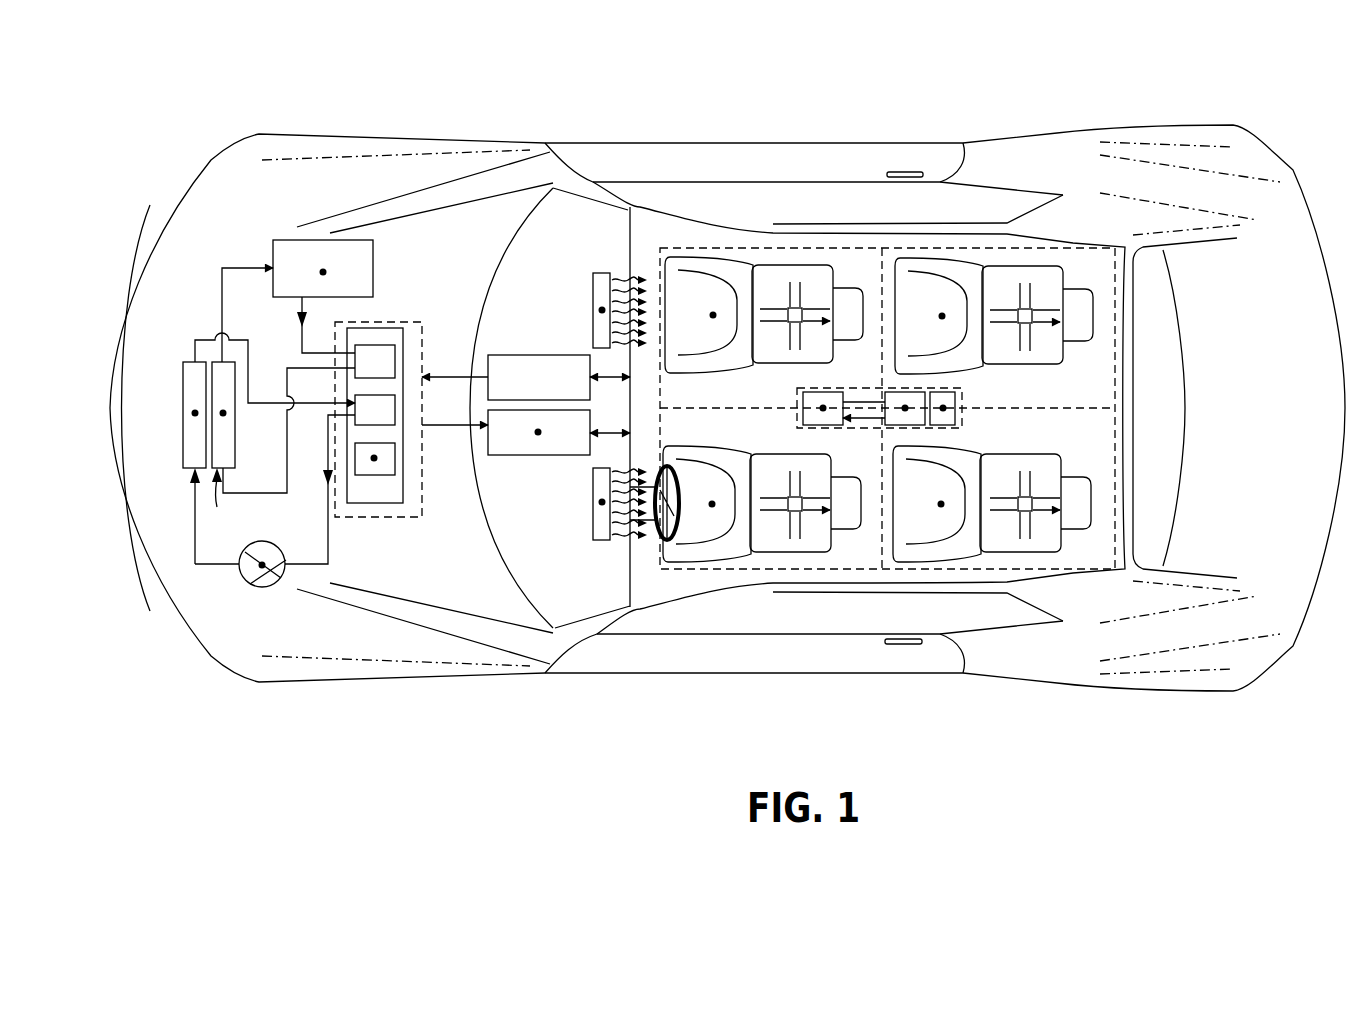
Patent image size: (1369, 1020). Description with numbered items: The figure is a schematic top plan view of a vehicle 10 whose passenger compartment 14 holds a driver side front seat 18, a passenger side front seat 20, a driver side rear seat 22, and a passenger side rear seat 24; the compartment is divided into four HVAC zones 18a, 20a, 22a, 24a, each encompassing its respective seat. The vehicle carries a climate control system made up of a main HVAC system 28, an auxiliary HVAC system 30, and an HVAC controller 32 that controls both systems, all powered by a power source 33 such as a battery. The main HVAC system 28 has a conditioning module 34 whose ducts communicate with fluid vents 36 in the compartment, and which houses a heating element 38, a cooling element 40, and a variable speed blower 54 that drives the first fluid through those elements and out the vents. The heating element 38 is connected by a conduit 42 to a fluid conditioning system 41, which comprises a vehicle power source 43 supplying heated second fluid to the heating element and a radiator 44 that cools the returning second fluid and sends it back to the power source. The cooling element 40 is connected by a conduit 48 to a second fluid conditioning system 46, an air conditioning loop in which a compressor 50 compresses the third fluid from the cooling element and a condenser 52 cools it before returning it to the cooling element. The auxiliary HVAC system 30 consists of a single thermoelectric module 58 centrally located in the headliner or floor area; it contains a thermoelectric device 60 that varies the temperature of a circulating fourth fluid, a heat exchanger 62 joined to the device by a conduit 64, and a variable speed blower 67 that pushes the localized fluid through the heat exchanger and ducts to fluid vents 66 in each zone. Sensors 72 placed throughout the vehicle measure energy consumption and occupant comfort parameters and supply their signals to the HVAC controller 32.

The vehicle 10 is at (293, 125).
The passenger compartment 14 is at (868, 247).
The driver side front seat 18 is at (680, 562).
The HVAC zone 18a is at (843, 565).
The passenger side front seat 20 is at (680, 372).
The HVAC zone 20a is at (862, 262).
The driver side rear seat 22 is at (1050, 462).
The HVAC zone 22a is at (1073, 565).
The passenger side rear seat 24 is at (1052, 277).
The HVAC zone 24a is at (1090, 263).
The main HVAC system 28 is at (430, 347).
The auxiliary HVAC system 30 is at (658, 247).
The HVAC controller 32 is at (538, 355).
The power source 33 is at (560, 455).
The conditioning module 34 is at (393, 322).
The fluid vents 36 is at (593, 280).
The heating element 38 is at (363, 378).
The cooling element 40 is at (388, 427).
The fluid conditioning system 41 is at (219, 501).
The conduit 42 is at (222, 305).
The vehicle power source 43 is at (288, 240).
The radiator 44 is at (235, 440).
The second fluid conditioning system 46 is at (246, 443).
The conduit 48 is at (330, 547).
The compressor 50 is at (265, 541).
The condenser 52 is at (183, 415).
The variable speed blower 54 is at (380, 475).
The thermoelectric module 58 is at (966, 423).
The thermoelectric device 60 is at (802, 391).
The heat exchanger 62 is at (927, 390).
The conduit 64 is at (877, 424).
The fluid vents 66 is at (790, 308).
The variable speed blower 67 is at (956, 405).
The sensors 72 is at (323, 272).